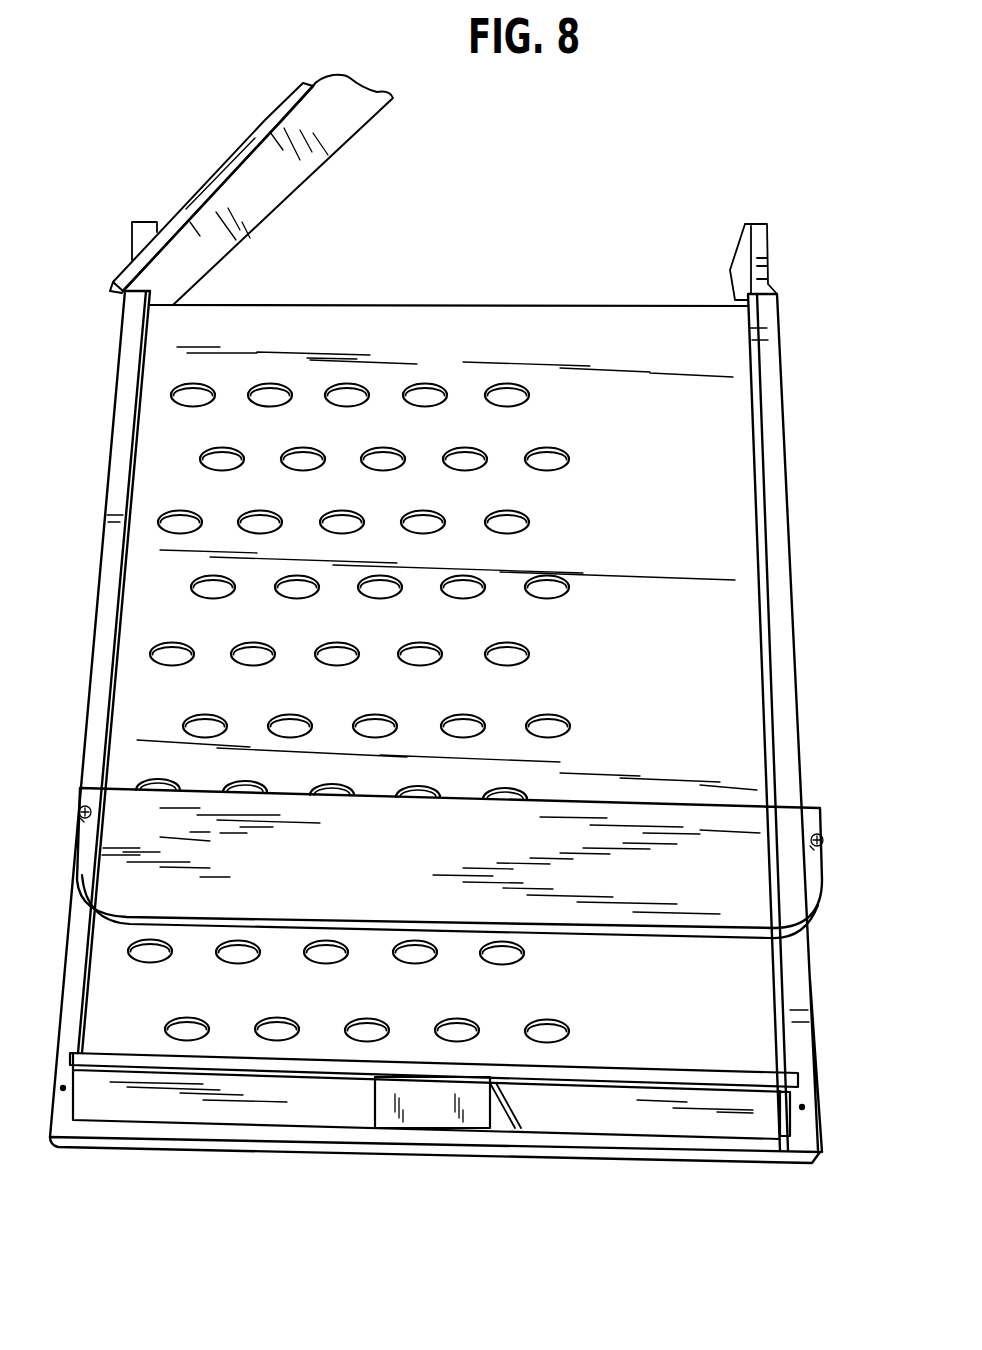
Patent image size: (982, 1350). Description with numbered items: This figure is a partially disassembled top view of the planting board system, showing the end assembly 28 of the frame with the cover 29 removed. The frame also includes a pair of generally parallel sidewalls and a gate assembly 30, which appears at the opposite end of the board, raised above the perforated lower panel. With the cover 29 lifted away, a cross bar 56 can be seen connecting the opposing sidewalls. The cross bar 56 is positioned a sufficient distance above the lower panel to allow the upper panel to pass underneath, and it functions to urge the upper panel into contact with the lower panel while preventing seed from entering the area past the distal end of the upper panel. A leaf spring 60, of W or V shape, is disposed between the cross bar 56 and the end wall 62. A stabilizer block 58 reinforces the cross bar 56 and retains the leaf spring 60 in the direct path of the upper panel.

The end assembly 28 is at (520, 1192).
The cover 29 is at (824, 858).
The gate assembly 30 is at (228, 160).
The cross bar 56 is at (752, 1072).
The stabilizer block 58 is at (417, 1115).
The leaf spring 60 is at (517, 1117).
The end wall 62 is at (230, 1152).